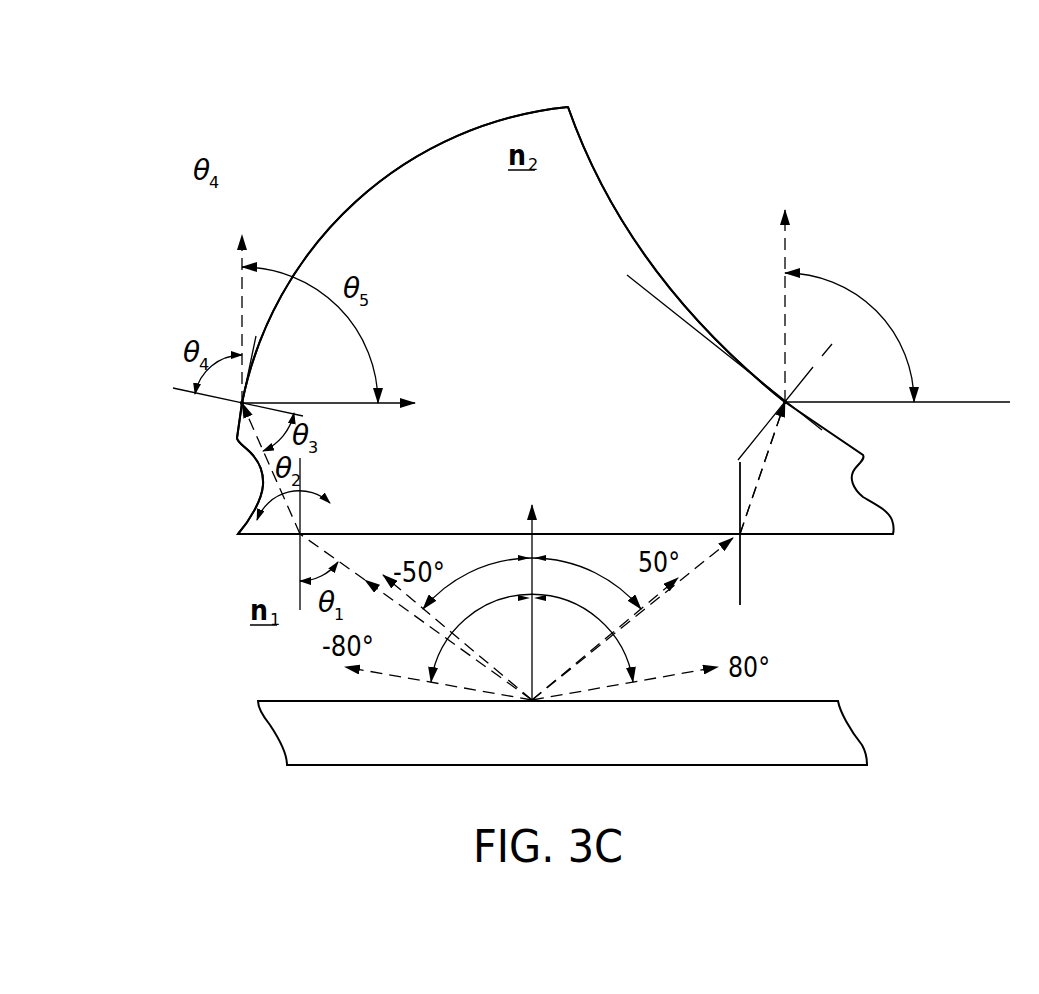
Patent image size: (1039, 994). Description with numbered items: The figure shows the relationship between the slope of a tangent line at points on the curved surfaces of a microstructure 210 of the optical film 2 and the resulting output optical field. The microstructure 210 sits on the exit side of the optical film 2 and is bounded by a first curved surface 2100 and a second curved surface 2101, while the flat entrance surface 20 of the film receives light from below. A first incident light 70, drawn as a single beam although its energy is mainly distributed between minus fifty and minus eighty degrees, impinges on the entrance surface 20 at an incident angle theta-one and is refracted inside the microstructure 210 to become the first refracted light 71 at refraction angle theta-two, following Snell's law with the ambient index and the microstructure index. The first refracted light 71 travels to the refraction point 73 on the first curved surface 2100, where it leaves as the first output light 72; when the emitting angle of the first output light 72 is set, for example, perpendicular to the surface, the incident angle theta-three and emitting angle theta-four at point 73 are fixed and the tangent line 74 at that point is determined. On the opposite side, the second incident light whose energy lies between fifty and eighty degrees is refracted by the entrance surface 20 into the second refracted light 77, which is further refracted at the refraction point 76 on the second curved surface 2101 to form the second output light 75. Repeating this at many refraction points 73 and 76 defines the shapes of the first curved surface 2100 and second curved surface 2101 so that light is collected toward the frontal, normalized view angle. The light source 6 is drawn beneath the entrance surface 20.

The optical film 2 is at (220, 122).
The microstructure 210 is at (500, 110).
The first curved surface 2100 is at (460, 132).
The second curved surface 2101 is at (610, 190).
The entrance surface 20 is at (805, 535).
The first refracted light 71 is at (257, 457).
The light emitting element 6 is at (795, 713).
The first incident light 70 is at (482, 663).
The first output light 72 is at (240, 293).
The refraction point 73 is at (240, 405).
The tangent line 74 is at (252, 355).
The second output light 75 is at (782, 260).
The refraction point 76 is at (782, 403).
The second refracted light 77 is at (670, 313).